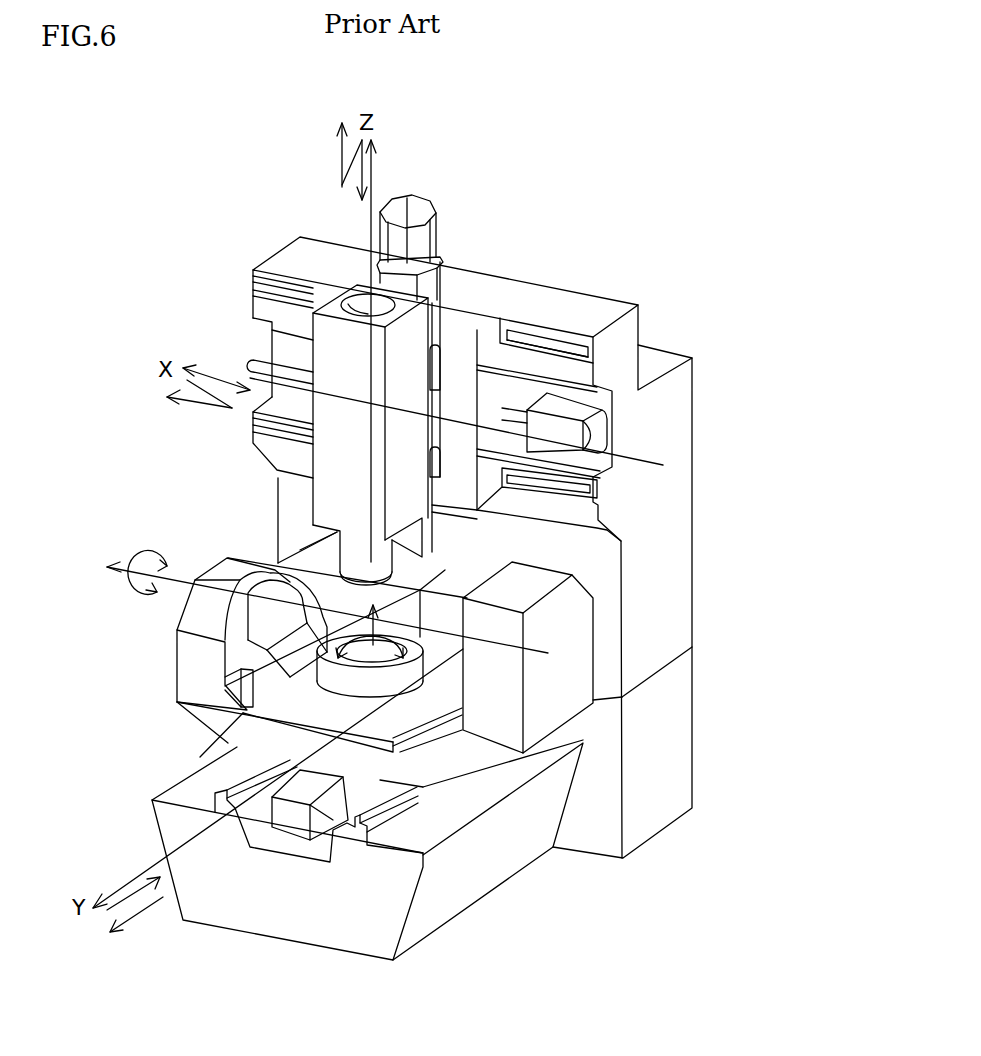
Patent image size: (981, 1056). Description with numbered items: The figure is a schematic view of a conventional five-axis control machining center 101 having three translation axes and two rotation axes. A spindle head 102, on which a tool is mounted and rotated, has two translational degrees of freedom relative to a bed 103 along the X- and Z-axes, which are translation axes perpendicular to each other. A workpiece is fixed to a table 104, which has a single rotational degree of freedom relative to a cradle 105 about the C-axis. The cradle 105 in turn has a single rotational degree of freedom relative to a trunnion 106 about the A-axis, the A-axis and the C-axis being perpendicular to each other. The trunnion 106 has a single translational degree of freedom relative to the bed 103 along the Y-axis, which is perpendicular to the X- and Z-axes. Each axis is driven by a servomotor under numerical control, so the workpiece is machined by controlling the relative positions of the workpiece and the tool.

The 5-axis control machining center 101 is at (680, 160).
The spindle head 102 is at (337, 573).
The bed 103 is at (503, 855).
The table 104 is at (310, 687).
The cradle 105 is at (300, 649).
The trunnion 106 is at (563, 700).